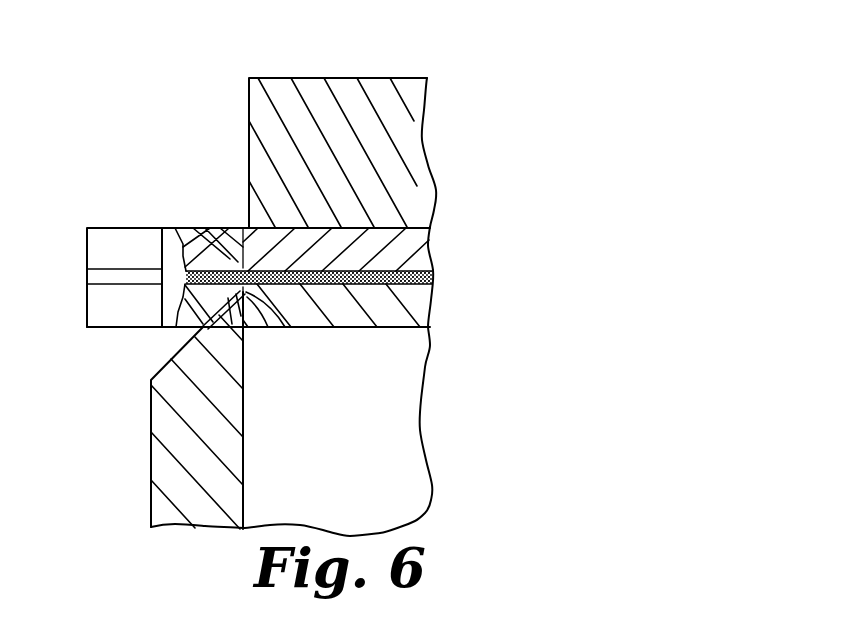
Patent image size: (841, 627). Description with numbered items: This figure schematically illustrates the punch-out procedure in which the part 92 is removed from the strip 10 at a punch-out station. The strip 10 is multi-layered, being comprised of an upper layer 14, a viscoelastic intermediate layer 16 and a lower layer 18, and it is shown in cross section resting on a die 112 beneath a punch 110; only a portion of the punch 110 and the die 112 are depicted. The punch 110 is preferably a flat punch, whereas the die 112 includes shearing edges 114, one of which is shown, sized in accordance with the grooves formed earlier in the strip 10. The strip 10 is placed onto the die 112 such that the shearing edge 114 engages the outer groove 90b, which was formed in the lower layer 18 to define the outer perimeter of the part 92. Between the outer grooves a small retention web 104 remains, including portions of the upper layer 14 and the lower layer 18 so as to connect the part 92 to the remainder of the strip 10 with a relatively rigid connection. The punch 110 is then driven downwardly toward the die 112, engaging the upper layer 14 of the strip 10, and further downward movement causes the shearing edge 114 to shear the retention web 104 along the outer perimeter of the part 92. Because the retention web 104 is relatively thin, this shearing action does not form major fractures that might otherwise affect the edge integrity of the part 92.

The strip 10 is at (187, 226).
The upper layer 14 is at (422, 248).
The intermediate layer 16 is at (430, 277).
The lower layer 18 is at (422, 302).
The outer groove 90b is at (280, 327).
The part 92 is at (408, 325).
The retention web 104 is at (188, 326).
The punch 110 is at (415, 146).
The die 112 is at (158, 462).
The shearing edge 114 is at (246, 342).